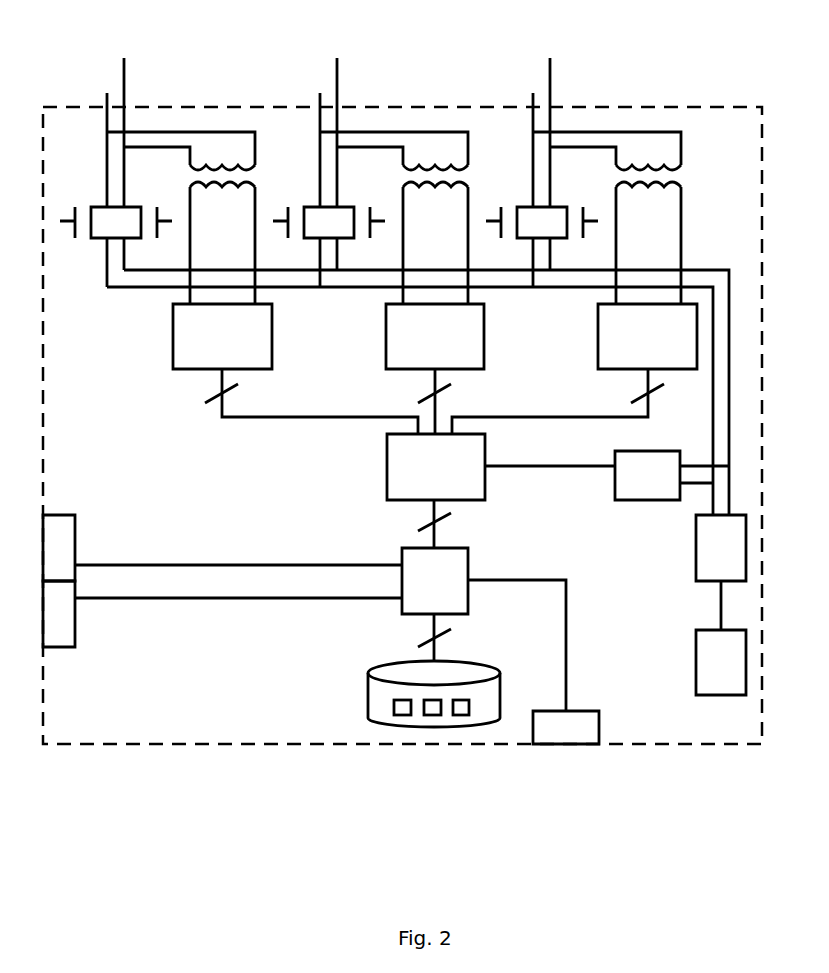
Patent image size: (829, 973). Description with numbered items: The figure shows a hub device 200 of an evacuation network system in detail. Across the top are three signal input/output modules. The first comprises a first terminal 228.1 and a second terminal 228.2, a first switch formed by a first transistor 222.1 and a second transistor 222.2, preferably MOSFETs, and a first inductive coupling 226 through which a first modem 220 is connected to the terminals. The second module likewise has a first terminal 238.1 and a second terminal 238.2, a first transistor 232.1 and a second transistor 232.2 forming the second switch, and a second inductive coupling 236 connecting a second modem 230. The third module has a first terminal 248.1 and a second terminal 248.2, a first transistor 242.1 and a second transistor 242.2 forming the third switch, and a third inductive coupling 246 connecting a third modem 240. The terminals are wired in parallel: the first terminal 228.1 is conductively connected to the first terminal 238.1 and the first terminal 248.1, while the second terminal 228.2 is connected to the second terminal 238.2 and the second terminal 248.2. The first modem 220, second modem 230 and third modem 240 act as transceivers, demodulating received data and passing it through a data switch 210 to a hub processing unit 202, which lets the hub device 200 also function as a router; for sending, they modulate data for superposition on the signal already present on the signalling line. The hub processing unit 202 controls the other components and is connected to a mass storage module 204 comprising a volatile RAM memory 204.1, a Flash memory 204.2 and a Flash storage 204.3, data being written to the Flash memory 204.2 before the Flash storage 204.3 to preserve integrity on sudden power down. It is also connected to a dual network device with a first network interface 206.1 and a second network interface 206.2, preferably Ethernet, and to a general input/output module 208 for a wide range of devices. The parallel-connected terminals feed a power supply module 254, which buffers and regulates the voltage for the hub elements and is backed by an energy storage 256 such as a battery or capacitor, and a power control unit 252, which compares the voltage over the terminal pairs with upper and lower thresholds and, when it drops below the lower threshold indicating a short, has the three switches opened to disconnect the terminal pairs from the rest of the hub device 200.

The hub device 200 is at (188, 745).
The hub processing unit 202 is at (402, 616).
The mass storage module 204 is at (390, 748).
The RAM memory 204.1 is at (397, 718).
The Flash memory 204.2 is at (433, 718).
The Flash storage 204.3 is at (463, 718).
The first network interface 206.1 is at (75, 528).
The second network interface 206.2 is at (75, 645).
The general input/output module 208 is at (563, 728).
The data switch 210 is at (387, 472).
The first modem 220 is at (173, 342).
The first transistor 222.1 is at (75, 217).
The second transistor 222.2 is at (157, 217).
The first inductive coupling 226 is at (222, 157).
The first terminal 228.1 is at (107, 93).
The second terminal 228.2 is at (124, 60).
The second modem 230 is at (386, 342).
The first transistor 232.1 is at (274, 141).
The second transistor 232.2 is at (373, 141).
The second inductive coupling 236 is at (394, 174).
The first terminal 238.1 is at (290, 149).
The second terminal 238.2 is at (356, 141).
The third modem 240 is at (598, 342).
The first switch 242.1 is at (487, 141).
The second switch 242.2 is at (586, 141).
The third transformer 246 is at (607, 174).
The first terminal 248.1 is at (503, 149).
The second terminal 248.2 is at (569, 141).
The power control unit 252 is at (615, 501).
The power supply module 254 is at (696, 550).
The energy storage 256 is at (696, 665).